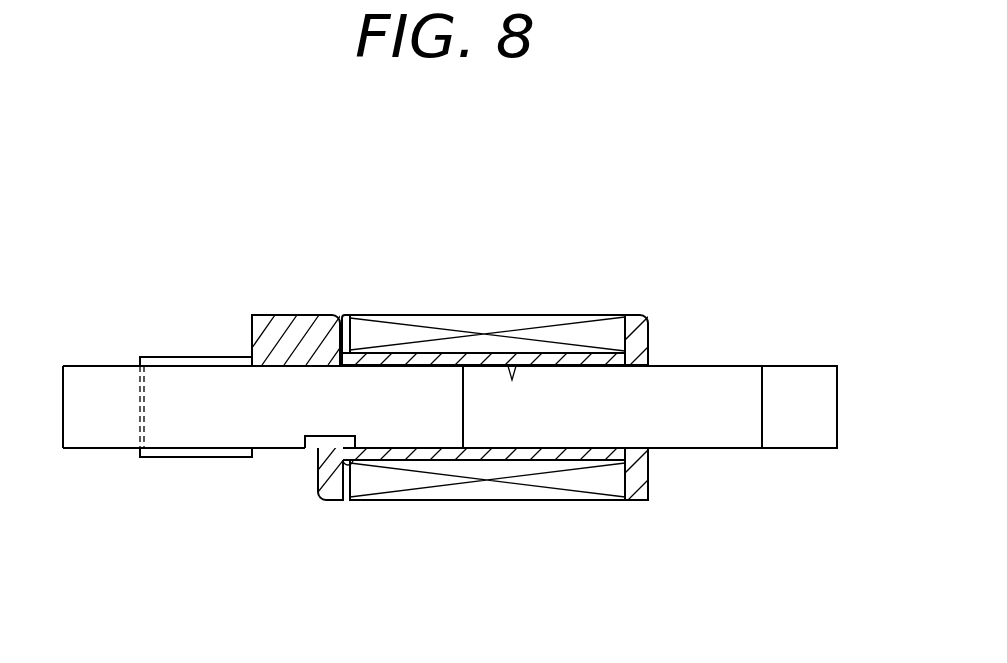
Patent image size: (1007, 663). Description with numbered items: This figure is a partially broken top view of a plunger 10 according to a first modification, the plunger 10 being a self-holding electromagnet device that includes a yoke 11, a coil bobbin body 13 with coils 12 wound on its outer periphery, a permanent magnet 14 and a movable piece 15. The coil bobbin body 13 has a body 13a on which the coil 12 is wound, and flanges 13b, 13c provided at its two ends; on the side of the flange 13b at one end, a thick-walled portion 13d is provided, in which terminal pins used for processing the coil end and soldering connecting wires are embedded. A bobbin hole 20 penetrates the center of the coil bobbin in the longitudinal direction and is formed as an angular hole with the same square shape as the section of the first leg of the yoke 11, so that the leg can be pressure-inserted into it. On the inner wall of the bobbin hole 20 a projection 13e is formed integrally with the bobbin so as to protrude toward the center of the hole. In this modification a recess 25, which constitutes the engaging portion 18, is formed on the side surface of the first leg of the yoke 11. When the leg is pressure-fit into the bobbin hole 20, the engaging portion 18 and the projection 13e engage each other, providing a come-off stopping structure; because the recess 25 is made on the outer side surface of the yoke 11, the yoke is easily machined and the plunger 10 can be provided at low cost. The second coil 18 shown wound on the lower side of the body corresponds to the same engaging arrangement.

The plunger 10 is at (454, 220).
The yoke 11 is at (93, 438).
The coil 12 is at (548, 320).
The coil bobbin body 13 is at (650, 470).
The body 13a is at (522, 455).
The flange 13b is at (333, 503).
The flange 13c is at (638, 498).
The thick-walled portion 13d is at (277, 327).
The projection 13e is at (352, 438).
The permanent magnet 14 is at (182, 457).
The movable piece 15 is at (695, 387).
The engaging portion 18 is at (357, 461).
The bobbin hole 20 is at (512, 378).
The recess 25 is at (322, 438).